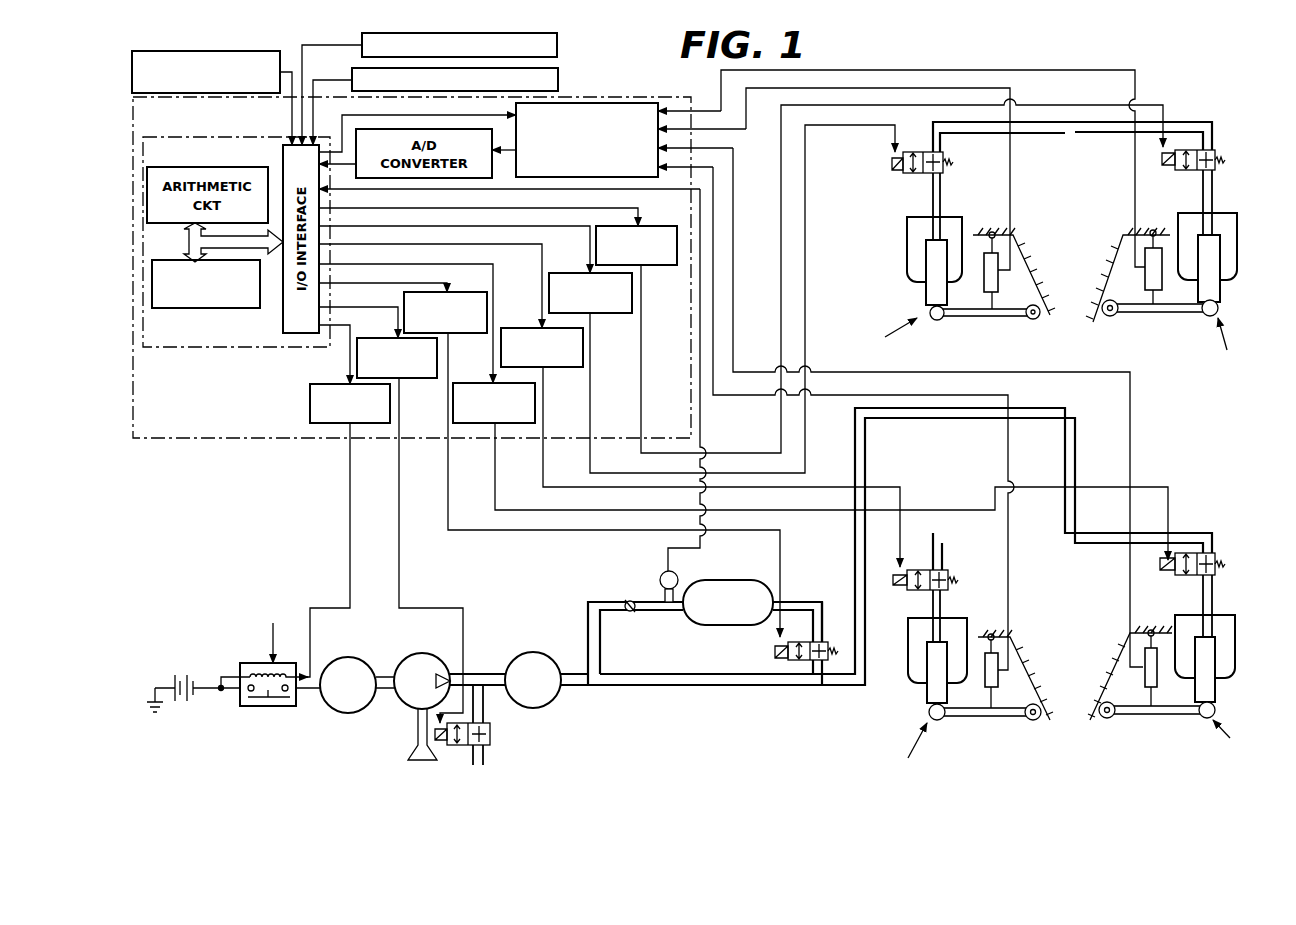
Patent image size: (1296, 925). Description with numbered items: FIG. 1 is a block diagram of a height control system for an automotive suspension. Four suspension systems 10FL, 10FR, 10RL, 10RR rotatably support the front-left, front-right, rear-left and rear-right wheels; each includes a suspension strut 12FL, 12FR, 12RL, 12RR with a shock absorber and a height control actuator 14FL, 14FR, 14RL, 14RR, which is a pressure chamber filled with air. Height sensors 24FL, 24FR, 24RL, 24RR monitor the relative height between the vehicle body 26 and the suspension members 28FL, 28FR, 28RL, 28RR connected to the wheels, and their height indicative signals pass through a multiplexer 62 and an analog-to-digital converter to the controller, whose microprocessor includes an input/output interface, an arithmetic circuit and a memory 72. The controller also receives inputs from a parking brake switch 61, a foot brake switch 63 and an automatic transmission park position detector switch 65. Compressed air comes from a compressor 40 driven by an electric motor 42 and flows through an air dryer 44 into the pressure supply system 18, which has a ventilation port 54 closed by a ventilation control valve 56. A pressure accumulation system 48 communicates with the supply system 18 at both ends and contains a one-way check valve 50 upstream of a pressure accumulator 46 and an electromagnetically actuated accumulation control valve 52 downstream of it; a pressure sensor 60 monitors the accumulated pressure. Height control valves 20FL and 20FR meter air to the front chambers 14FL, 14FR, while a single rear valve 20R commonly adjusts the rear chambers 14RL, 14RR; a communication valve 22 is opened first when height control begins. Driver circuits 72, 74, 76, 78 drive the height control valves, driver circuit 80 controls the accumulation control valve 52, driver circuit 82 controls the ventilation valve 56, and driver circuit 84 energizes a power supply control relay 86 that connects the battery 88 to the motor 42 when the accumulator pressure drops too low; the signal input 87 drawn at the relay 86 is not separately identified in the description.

The automatic power transmission park position detector switch 65 is at (236, 52).
The foot brake switch 63 is at (557, 43).
The parking brake switch 61 is at (558, 79).
The multiplexer 62 is at (615, 103).
The memory 72 is at (570, 273).
The driver circuit 74 is at (660, 226).
The driver circuit 76 is at (470, 383).
The driver circuit 78 is at (519, 328).
The driver circuit 80 is at (462, 292).
The driver circuit 82 is at (412, 378).
The driver circuit 84 is at (322, 384).
The power supply control relay 86 is at (280, 706).
The relay coil signal 87 is at (269, 632).
The vehicular battery 88 is at (186, 702).
The electric motor 42 is at (366, 710).
The motor driven compressor 40 is at (428, 653).
The air dryer 44 is at (528, 652).
The ventilation port 54 is at (483, 762).
The ventilation control valve 56 is at (462, 745).
The pressure supply system 18 is at (866, 445).
The one-way check valve 50 is at (627, 600).
The pressure accumulator 46 is at (728, 580).
The pressure sensor 60 is at (660, 573).
The pressure accumulation system 48 is at (785, 592).
The pressure accumulation control valve 52 is at (828, 640).
The height control valve means 20FL is at (943, 170).
The height control valve means 20FR is at (1215, 148).
The height control valve means 20R is at (1215, 552).
The communication valve 22 is at (948, 568).
The height control actuator means 14FL is at (912, 222).
The height control actuator means 14FR is at (1228, 222).
The height control actuator means 14RL is at (913, 628).
The height control actuator means 14RR is at (1225, 622).
The suspension strut 12FL is at (926, 292).
The suspension strut 12FR is at (1215, 282).
The suspension strut 12RL is at (927, 692).
The suspension strut 12RR is at (1215, 682).
The suspension system 10FL is at (882, 339).
The suspension system 10FR is at (1222, 349).
The suspension system 10RL is at (902, 754).
The suspension system 10RR is at (1242, 744).
The height sensor 24FL is at (998, 288).
The height sensor 24FR is at (1143, 280).
The height sensor 24RL is at (998, 690).
The height sensor 24RR is at (1138, 690).
The suspension member 28FL is at (966, 316).
The suspension member 28FR is at (1177, 312).
The suspension member 28RL is at (968, 716).
The suspension member 28RR is at (1172, 714).
The vehicle body 26 is at (1022, 262).